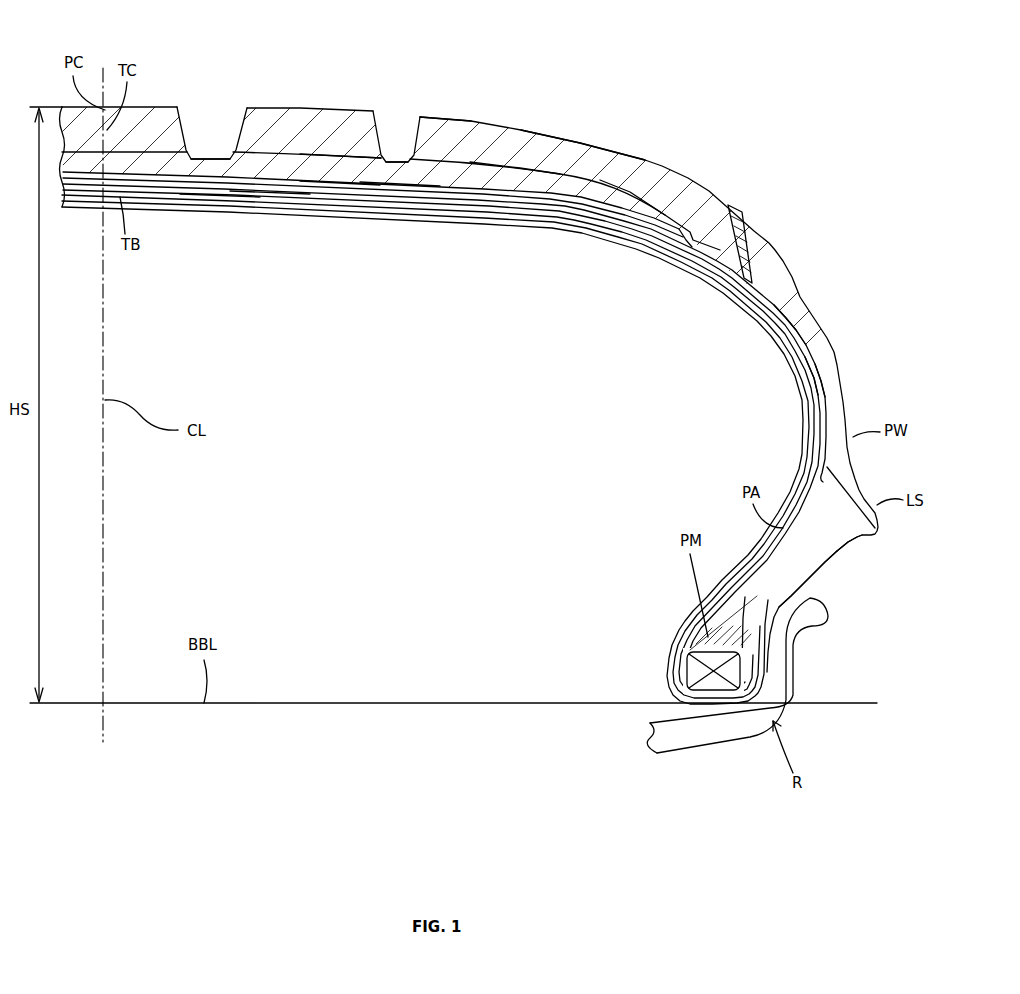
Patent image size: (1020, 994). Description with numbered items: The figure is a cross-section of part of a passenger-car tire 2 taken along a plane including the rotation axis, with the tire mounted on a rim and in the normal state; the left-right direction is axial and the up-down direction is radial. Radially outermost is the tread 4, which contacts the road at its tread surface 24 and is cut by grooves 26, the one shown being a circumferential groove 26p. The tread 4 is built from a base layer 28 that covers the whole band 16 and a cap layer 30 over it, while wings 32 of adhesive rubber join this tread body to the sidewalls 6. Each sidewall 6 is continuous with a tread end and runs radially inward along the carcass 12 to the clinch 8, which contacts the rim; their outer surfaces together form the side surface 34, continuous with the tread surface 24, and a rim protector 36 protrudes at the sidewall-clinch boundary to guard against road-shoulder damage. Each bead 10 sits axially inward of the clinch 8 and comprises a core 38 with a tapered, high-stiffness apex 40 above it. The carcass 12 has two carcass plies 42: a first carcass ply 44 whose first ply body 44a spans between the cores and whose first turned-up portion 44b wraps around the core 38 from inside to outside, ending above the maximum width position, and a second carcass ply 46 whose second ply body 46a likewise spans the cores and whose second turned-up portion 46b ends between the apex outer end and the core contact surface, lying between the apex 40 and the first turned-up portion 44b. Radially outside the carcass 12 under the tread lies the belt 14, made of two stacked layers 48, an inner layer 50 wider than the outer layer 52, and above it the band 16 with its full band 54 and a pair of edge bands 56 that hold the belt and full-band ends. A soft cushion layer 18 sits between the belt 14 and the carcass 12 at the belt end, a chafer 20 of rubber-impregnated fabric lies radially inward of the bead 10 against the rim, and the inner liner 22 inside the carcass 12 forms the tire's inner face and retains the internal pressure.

The tire 2 is at (778, 65).
The tread 4 is at (556, 140).
The sidewall 6 is at (824, 333).
The clinch 8 is at (838, 551).
The bead 10 is at (606, 604).
The carcass 12 is at (177, 202).
The belt 14 is at (325, 302).
The band 16 is at (273, 166).
The cushion layer 18 is at (680, 258).
The chafer 20 is at (650, 710).
The inner liner 22 is at (773, 347).
The tread surface 24 is at (143, 106).
The groove 26 is at (186, 130).
The circumferential groove 26p is at (291, 100).
The base layer 28 is at (331, 150).
The cap layer 30 is at (448, 133).
The wing 32 is at (744, 214).
The side surface 34 is at (860, 482).
The rim protector 36 is at (870, 534).
The core 38 is at (700, 670).
The apex 40 is at (707, 635).
The carcass ply 42 is at (222, 195).
The first carcass ply 44 is at (220, 251).
The second carcass ply 46 is at (270, 246).
The first ply body 44a is at (803, 384).
The first turned-up portion 44b is at (820, 386).
The second ply body 46a is at (797, 324).
The second turned-up portion 46b is at (767, 640).
The layer 48 is at (333, 208).
The inner layer 50 is at (340, 241).
The outer layer 52 is at (400, 242).
The full band 54 is at (500, 185).
The edge band 56 is at (623, 184).